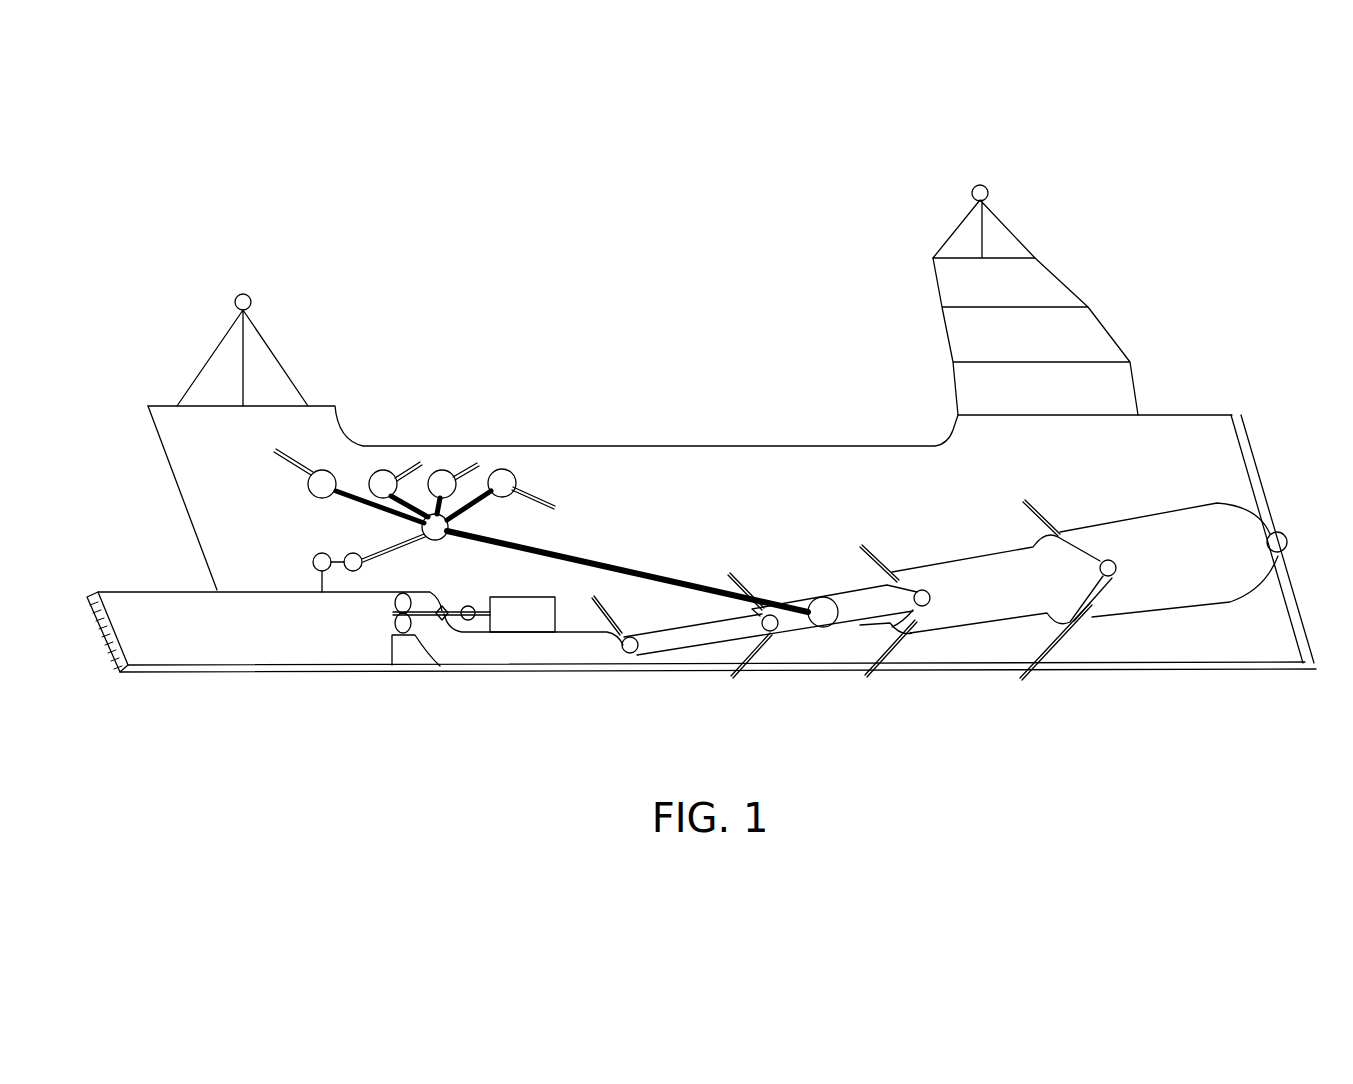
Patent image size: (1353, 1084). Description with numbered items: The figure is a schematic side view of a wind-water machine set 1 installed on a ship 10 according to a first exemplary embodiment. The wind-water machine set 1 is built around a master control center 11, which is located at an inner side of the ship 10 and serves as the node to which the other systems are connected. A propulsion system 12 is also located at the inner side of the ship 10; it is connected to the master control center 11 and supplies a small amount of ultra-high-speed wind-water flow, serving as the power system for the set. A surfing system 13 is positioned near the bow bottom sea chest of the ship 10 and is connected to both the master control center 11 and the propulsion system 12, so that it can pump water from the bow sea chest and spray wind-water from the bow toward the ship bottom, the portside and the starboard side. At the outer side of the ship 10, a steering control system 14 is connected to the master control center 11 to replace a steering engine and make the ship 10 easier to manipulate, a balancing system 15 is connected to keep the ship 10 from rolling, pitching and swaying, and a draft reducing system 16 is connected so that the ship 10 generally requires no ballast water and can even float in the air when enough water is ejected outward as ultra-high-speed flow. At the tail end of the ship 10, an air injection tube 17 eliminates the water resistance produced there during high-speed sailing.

The wind-water machine set 1 is at (384, 183).
The ship 10 is at (1178, 415).
The master control center 11 is at (440, 541).
The propulsion system 12 is at (837, 626).
The surfing system 13 is at (321, 469).
The steering control system 14 is at (383, 469).
The balancing system 15 is at (441, 469).
The draft reducing system 16 is at (503, 469).
The air injection tube 17 is at (1307, 667).